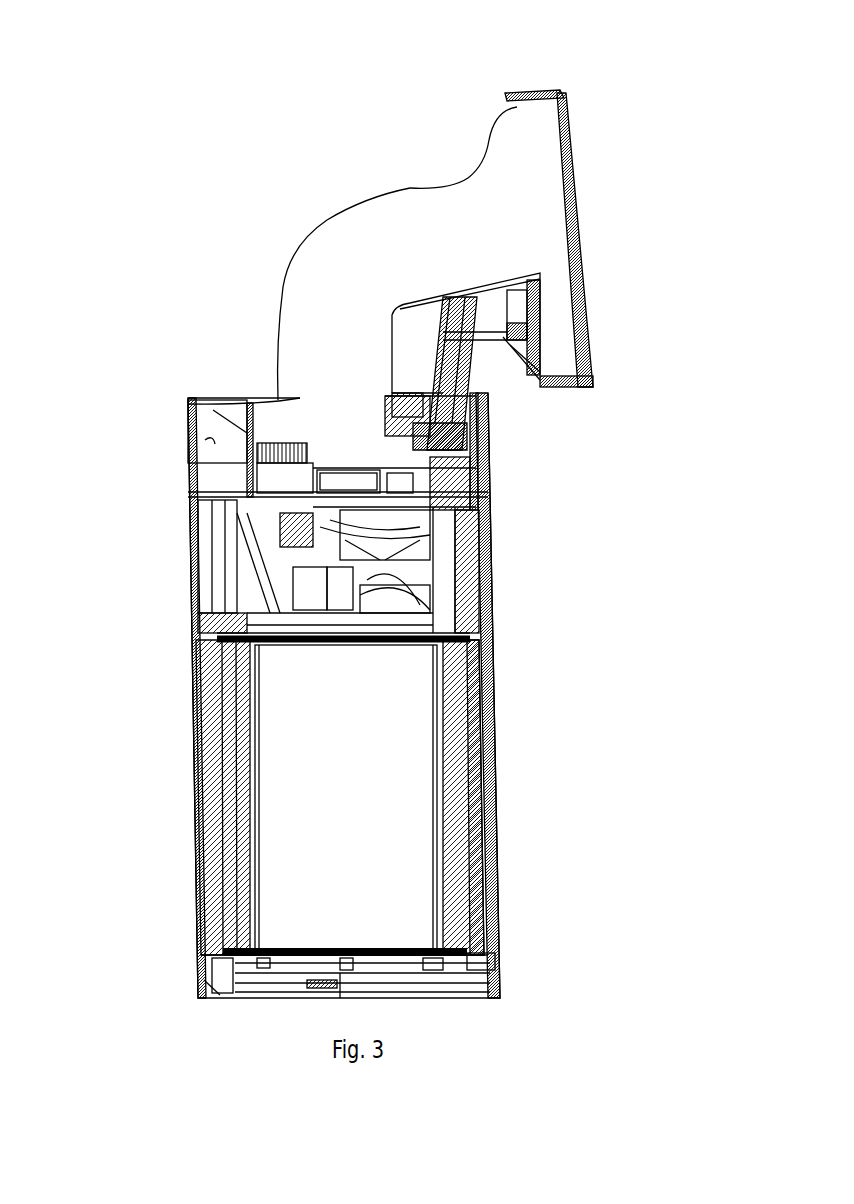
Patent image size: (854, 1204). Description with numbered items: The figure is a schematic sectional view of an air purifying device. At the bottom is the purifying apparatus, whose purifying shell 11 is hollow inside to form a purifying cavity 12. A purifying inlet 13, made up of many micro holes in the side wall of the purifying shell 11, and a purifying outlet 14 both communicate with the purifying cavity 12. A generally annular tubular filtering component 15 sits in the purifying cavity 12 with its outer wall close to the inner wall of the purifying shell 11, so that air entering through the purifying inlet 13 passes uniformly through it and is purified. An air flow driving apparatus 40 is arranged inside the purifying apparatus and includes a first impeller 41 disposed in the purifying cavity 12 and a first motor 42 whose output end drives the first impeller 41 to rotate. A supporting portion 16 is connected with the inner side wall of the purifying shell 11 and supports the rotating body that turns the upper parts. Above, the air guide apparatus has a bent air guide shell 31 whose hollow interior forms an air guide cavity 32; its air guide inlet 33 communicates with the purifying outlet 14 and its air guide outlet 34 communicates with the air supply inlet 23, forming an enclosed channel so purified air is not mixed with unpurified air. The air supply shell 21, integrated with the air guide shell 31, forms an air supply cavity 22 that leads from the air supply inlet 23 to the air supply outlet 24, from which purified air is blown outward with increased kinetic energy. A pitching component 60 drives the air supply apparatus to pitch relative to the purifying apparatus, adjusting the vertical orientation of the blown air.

The purifying shell 11 is at (176, 672).
The purifying cavity 12 is at (387, 815).
The purifying inlet 13 is at (195, 855).
The purifying outlet 14 is at (343, 410).
The filtering component 15 is at (443, 735).
The supporting portion 16 is at (262, 477).
The air supply shell 21 is at (510, 107).
The air supply cavity 22 is at (518, 170).
The air supply inlet 23 is at (487, 230).
The air supply outlet 24 is at (573, 217).
The air guide shell 31 is at (297, 242).
The air guide cavity 32 is at (353, 272).
The air guide inlet 33 is at (330, 387).
The air guide outlet 34 is at (460, 230).
The air flow driving apparatus 40 is at (425, 566).
The first impeller 41 is at (372, 577).
The first motor 42 is at (355, 523).
The pitching component 60 is at (467, 367).